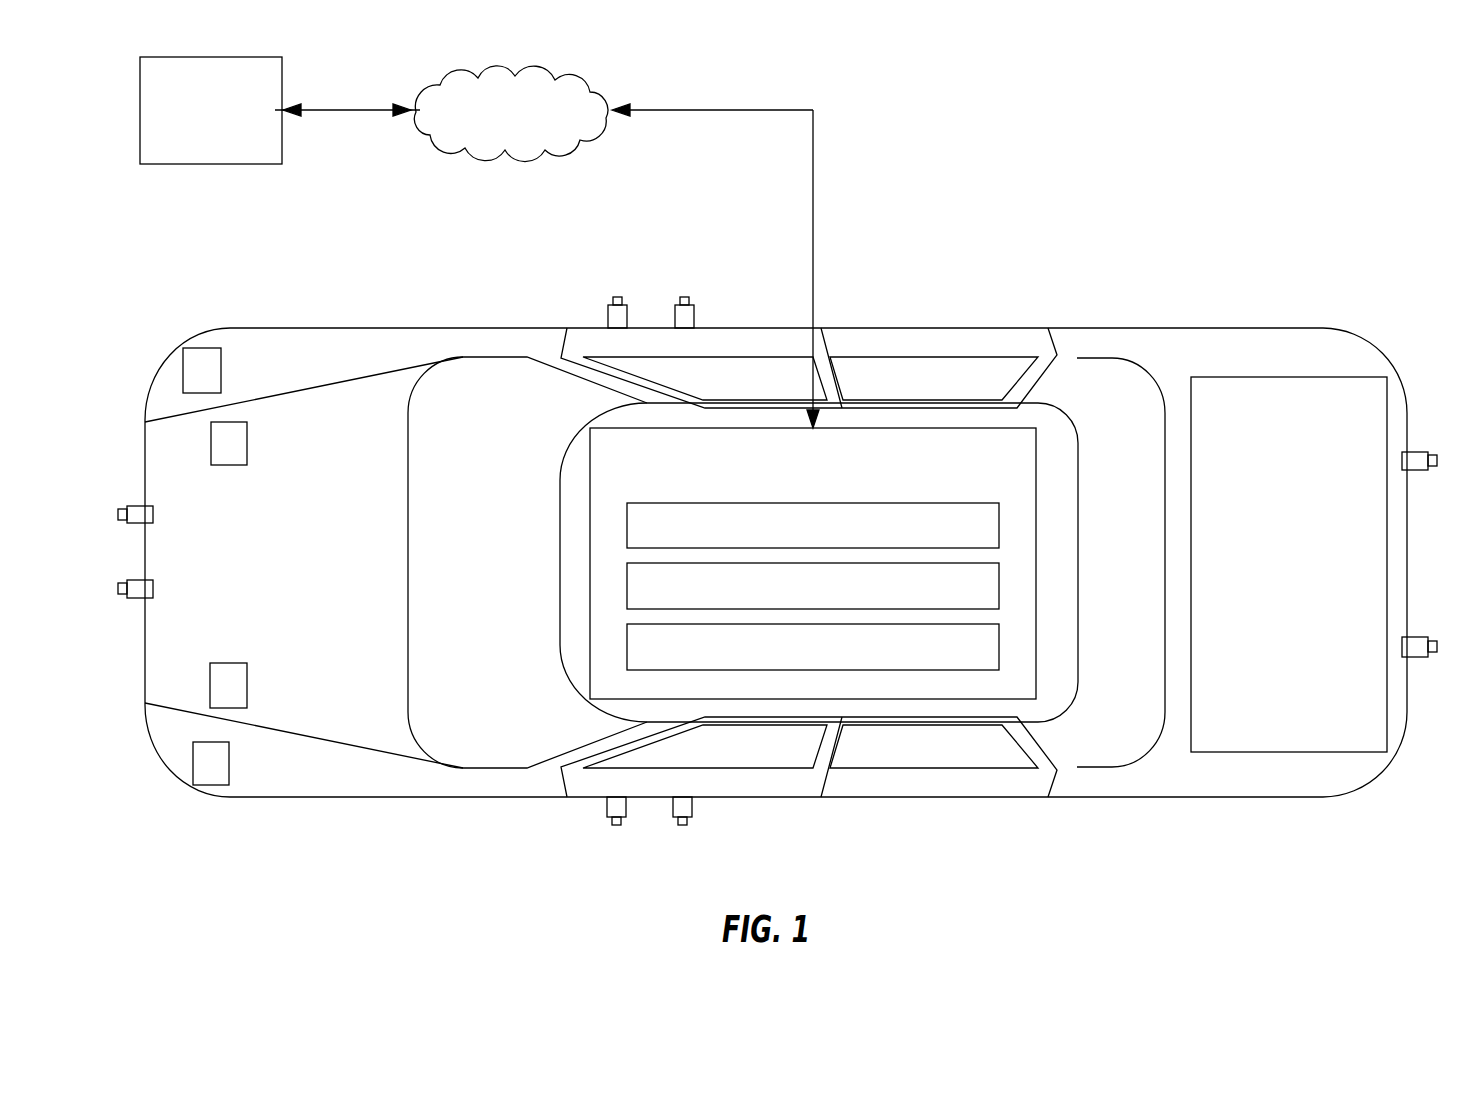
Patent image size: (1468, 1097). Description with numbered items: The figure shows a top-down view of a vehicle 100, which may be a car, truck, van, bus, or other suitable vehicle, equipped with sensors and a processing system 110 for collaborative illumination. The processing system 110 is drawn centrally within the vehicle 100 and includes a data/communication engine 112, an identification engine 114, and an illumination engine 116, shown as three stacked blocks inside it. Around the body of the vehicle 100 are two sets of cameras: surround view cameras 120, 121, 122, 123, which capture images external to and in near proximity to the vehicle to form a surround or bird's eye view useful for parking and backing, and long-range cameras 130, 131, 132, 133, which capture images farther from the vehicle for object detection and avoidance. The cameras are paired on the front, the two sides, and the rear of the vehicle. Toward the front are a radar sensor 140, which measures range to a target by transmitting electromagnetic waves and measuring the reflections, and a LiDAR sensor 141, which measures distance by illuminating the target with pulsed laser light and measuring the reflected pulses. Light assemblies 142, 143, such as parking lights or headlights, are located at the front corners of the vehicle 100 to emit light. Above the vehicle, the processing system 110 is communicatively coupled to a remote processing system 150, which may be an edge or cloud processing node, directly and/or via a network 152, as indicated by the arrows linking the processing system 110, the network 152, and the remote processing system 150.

The vehicle 100 is at (293, 327).
The processing system 110 is at (829, 464).
The data/communication engine 112 is at (986, 537).
The identification engine 114 is at (986, 597).
The illumination engine 116 is at (986, 659).
The camera 120 is at (130, 506).
The camera 121 is at (617, 826).
The camera 122 is at (618, 296).
The camera 123 is at (1413, 471).
The camera 130 is at (130, 580).
The camera 131 is at (683, 826).
The camera 132 is at (683, 296).
The camera 133 is at (1413, 658).
The radar sensor 140 is at (240, 466).
The LiDAR sensor 141 is at (215, 663).
The light assembly 142 is at (190, 348).
The light assembly 143 is at (213, 786).
The remote processing system 150 is at (227, 122).
The network 152 is at (527, 122).